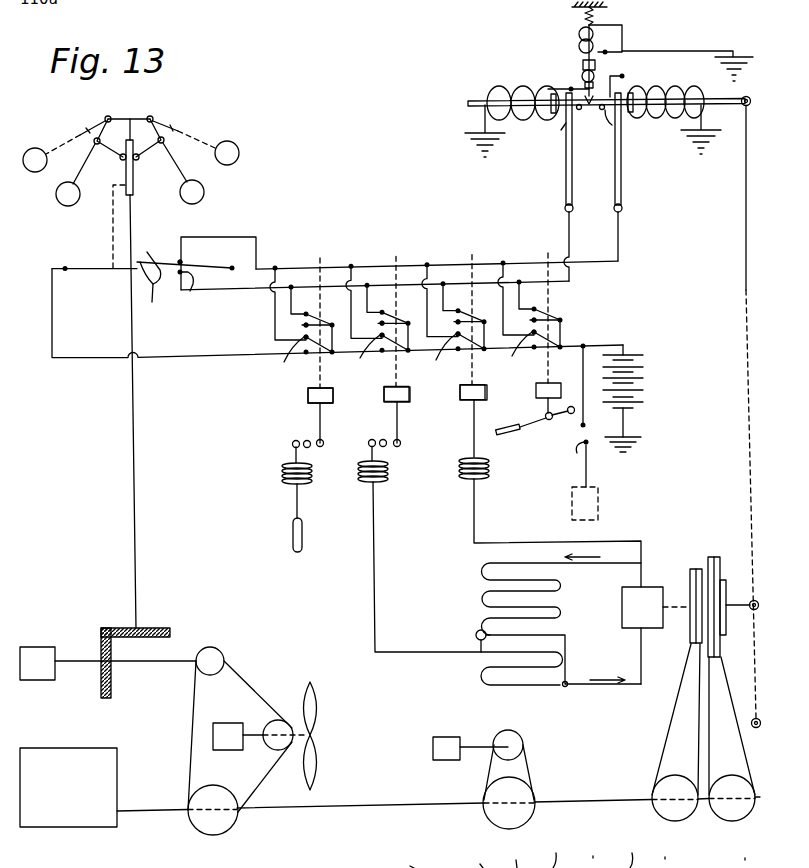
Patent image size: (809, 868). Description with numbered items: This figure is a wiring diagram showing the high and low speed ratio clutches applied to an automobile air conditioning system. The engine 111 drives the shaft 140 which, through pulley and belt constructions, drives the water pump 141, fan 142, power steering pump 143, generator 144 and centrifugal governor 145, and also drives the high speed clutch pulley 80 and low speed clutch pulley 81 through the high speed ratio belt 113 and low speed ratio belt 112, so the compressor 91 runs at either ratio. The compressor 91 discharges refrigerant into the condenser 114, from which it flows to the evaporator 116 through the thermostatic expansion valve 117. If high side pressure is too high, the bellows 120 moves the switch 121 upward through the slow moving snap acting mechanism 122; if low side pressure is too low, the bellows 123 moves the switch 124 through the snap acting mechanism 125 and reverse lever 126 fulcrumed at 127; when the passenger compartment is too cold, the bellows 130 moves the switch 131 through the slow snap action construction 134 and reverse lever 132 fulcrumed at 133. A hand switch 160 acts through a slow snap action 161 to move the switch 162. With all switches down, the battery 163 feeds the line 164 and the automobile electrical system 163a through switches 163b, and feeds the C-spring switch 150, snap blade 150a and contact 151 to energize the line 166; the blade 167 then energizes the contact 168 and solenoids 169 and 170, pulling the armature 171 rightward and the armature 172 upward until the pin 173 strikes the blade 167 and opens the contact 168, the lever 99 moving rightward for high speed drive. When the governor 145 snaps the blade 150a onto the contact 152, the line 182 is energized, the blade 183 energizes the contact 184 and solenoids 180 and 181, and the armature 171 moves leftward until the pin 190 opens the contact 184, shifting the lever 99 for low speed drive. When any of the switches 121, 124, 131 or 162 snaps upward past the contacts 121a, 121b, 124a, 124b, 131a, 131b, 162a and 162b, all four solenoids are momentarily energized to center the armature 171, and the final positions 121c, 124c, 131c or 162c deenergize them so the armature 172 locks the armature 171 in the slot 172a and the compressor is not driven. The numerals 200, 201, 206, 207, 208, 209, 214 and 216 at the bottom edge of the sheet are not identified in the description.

The high speed clutch pulley 80 is at (690, 582).
The low speed clutch pulley 81 is at (720, 572).
The compressor 91 is at (622, 612).
The lever 99 is at (746, 270).
The engine 111 is at (100, 748).
The low speed ratio belt 112 is at (729, 705).
The high speed ratio belt 113 is at (665, 745).
The condenser 114 is at (480, 573).
The evaporator 116 is at (484, 681).
The thermostatic expansion valve 117 is at (476, 632).
The bellows 120 is at (485, 484).
The switch 121 is at (464, 308).
The contact 121a is at (433, 359).
The contact 121b is at (457, 327).
The upper position 121c is at (462, 314).
The slow moving snap acting mechanism 122 is at (487, 392).
The bellows 123 is at (385, 486).
The switch 124 is at (388, 310).
The contact 124a is at (360, 352).
The contact 124b is at (381, 328).
The upper position 124c is at (386, 316).
The slow moving snap acting mechanism 125 is at (410, 400).
The reverse lever 126 is at (373, 440).
The fulcrum 127 is at (388, 445).
The bellows 130 is at (284, 485).
The switch 131 is at (312, 312).
The contact 131a is at (281, 360).
The contact 131b is at (305, 330).
The upper position 131c is at (312, 318).
The reverse lever 132 is at (307, 440).
The fulcrum 133 is at (293, 445).
The slow snap action construction 134 is at (308, 395).
The shaft 140 is at (345, 805).
The water pump 141 is at (229, 723).
The fan 142 is at (314, 692).
The power steering pump 143 is at (433, 747).
The generator 144 is at (52, 647).
The centrifugal governor 145 is at (140, 176).
The snap acting switch 150 is at (150, 290).
The snap blade 150a is at (228, 267).
The contact 151 is at (181, 261).
The contact 152 is at (191, 291).
The hand switch 160 is at (518, 432).
The slow snap action 161 is at (553, 383).
The switch 162 is at (556, 318).
The contact 162a is at (520, 352).
The companion contact 162b is at (534, 326).
The upper position 162c is at (550, 312).
The battery 163 is at (640, 410).
The automobile electrical system 163a is at (598, 503).
The switch 163b is at (577, 455).
The line 164 is at (105, 358).
The line 166 is at (255, 236).
The blade 167 is at (621, 172).
The contact 168 is at (621, 155).
The solenoid 169 is at (683, 87).
The solenoid 170 is at (579, 38).
The armature 171 is at (468, 103).
The armature 172 is at (594, 25).
The slot 172a is at (612, 80).
The pin 173 is at (612, 126).
The solenoid 180 is at (522, 86).
The solenoid 181 is at (582, 66).
The line 182 is at (247, 292).
The blade 183 is at (566, 175).
The contact 184 is at (566, 158).
The pin 190 is at (561, 131).
The frame 200 is at (745, 863).
The member 201 is at (555, 851).
The member 206 is at (630, 851).
The member 207 is at (593, 861).
The member 208 is at (665, 861).
The member 209 is at (518, 863).
The member 214 is at (407, 857).
The member 216 is at (478, 856).